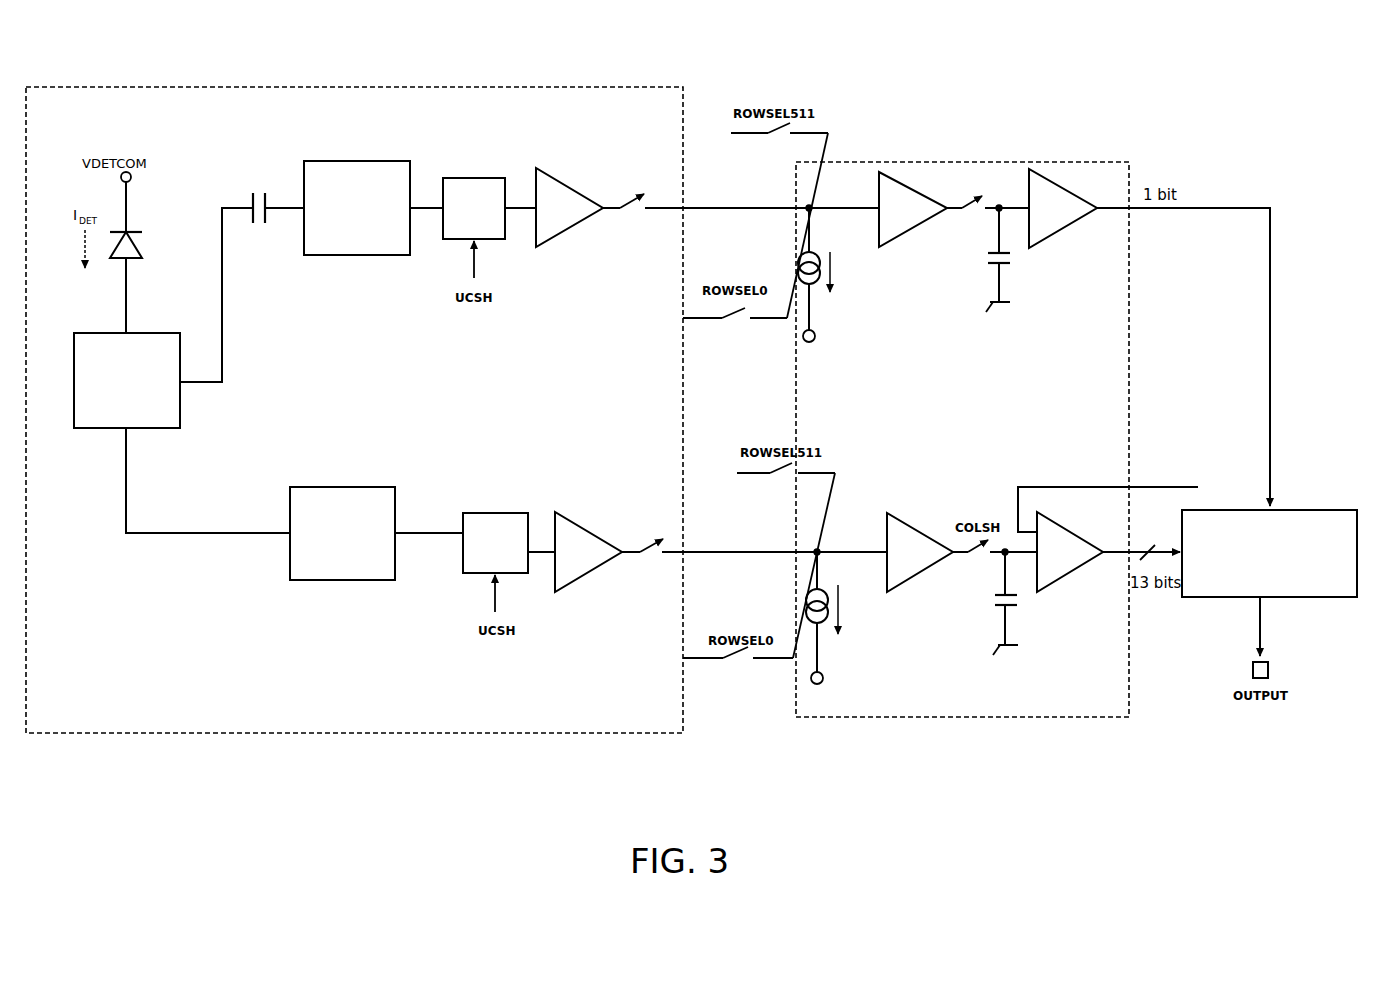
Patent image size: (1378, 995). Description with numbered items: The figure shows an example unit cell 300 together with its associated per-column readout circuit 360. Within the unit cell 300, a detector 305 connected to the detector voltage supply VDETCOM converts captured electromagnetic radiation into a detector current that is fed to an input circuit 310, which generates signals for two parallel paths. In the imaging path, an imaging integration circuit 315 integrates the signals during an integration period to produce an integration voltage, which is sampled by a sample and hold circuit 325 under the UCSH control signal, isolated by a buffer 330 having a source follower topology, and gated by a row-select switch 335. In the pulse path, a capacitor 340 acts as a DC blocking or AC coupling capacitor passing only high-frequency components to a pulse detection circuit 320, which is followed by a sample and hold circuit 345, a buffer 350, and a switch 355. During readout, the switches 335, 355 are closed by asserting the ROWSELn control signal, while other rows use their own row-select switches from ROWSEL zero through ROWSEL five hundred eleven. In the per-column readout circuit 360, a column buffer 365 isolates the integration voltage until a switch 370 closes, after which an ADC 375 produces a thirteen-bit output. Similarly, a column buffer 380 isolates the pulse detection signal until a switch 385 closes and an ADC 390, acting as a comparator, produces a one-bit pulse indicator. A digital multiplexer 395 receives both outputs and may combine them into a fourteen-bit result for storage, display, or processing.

The unit cell 300 is at (52, 86).
The detector 305 is at (142, 247).
The input circuit 310 is at (155, 333).
The imaging integration circuit 315 is at (340, 486).
The pulse detection circuit 320 is at (351, 160).
The sample and hold circuit 325 is at (495, 512).
The buffer 330 is at (575, 515).
The switch 335 is at (653, 560).
The capacitor 340 is at (258, 226).
The sample and hold circuit 345 is at (485, 178).
The buffer 350 is at (563, 182).
The switch 355 is at (633, 217).
The per-column readout circuit 360 is at (905, 160).
The column buffer 365 is at (903, 522).
The switch 370 is at (985, 560).
The ADC 375 is at (1072, 575).
The column buffer 380 is at (910, 227).
The switch 385 is at (970, 215).
The ADC 390 is at (1062, 232).
The digital multiplexer 395 is at (1310, 508).